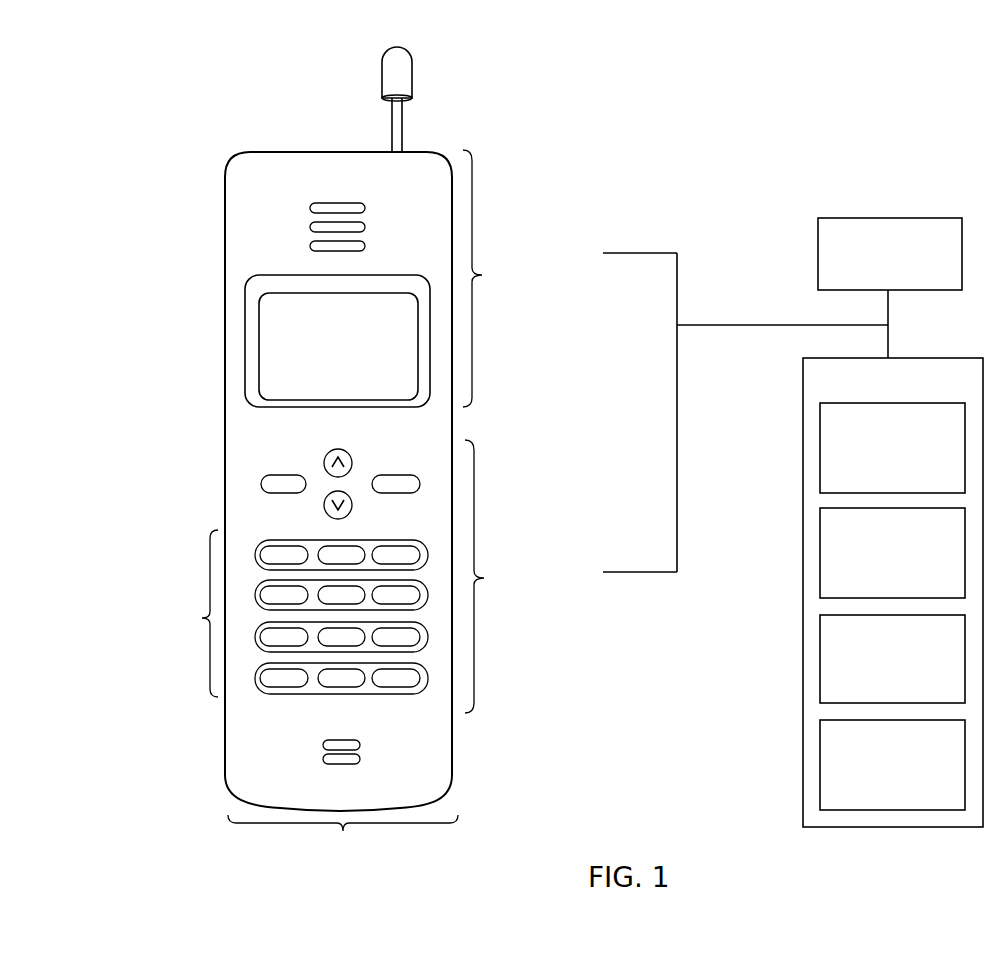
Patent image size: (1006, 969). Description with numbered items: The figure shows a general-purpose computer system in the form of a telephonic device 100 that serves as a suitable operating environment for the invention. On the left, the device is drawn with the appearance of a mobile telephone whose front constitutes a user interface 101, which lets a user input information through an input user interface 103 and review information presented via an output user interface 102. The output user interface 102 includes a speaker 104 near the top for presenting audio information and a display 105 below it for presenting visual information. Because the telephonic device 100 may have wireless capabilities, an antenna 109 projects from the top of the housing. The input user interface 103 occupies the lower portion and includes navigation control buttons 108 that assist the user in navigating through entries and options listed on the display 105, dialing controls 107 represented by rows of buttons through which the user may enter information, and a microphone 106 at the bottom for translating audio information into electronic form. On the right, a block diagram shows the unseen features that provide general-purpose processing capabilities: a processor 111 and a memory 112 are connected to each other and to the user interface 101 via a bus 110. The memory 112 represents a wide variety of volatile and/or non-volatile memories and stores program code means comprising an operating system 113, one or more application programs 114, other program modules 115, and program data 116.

The telephonic device 100 is at (722, 121).
The user interface 101 is at (343, 852).
The output user interface 102 is at (570, 278).
The input user interface 103 is at (571, 576).
The speaker 104 is at (205, 219).
The display 105 is at (205, 352).
The microphone 106 is at (205, 750).
The dialing controls 107 is at (271, 613).
The navigation control buttons 108 is at (205, 478).
The antenna 109 is at (442, 110).
The bus 110 is at (712, 323).
The processor 111 is at (890, 254).
The memory 112 is at (893, 592).
The operating system 113 is at (892, 448).
The application programs 114 is at (892, 553).
The program modules 115 is at (892, 659).
The program data 116 is at (892, 765).